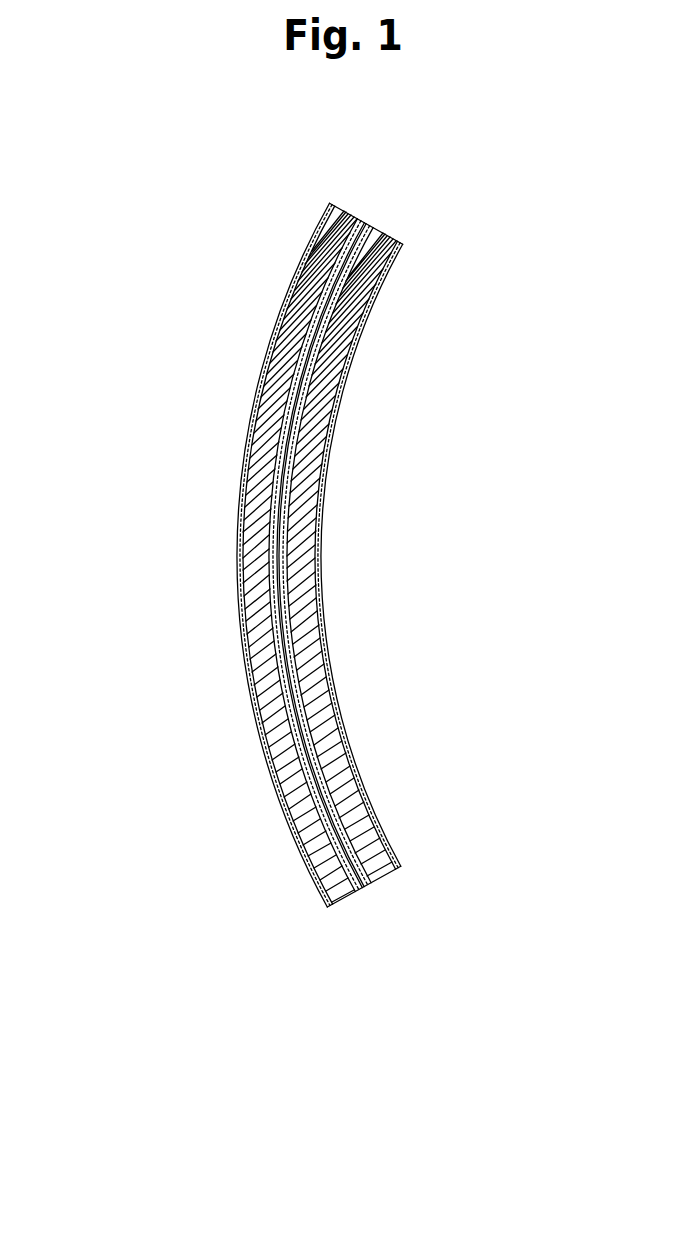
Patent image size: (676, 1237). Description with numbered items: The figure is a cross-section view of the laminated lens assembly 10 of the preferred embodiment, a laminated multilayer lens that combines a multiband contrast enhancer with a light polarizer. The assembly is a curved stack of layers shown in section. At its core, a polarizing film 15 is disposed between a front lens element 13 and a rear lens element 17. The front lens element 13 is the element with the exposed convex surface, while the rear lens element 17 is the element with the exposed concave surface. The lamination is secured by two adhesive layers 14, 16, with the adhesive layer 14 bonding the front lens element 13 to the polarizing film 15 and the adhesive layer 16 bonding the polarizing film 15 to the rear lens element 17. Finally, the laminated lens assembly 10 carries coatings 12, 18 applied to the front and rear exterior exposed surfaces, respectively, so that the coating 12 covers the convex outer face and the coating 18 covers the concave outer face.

The laminated lens assembly 10 is at (217, 293).
The coating 12 is at (316, 876).
The front lens element 13 is at (343, 897).
The adhesive layer 14 is at (357, 889).
The polarizing film 15 is at (364, 887).
The adhesive layer 16 is at (370, 885).
The rear lens element 17 is at (385, 881).
The coating 18 is at (389, 842).